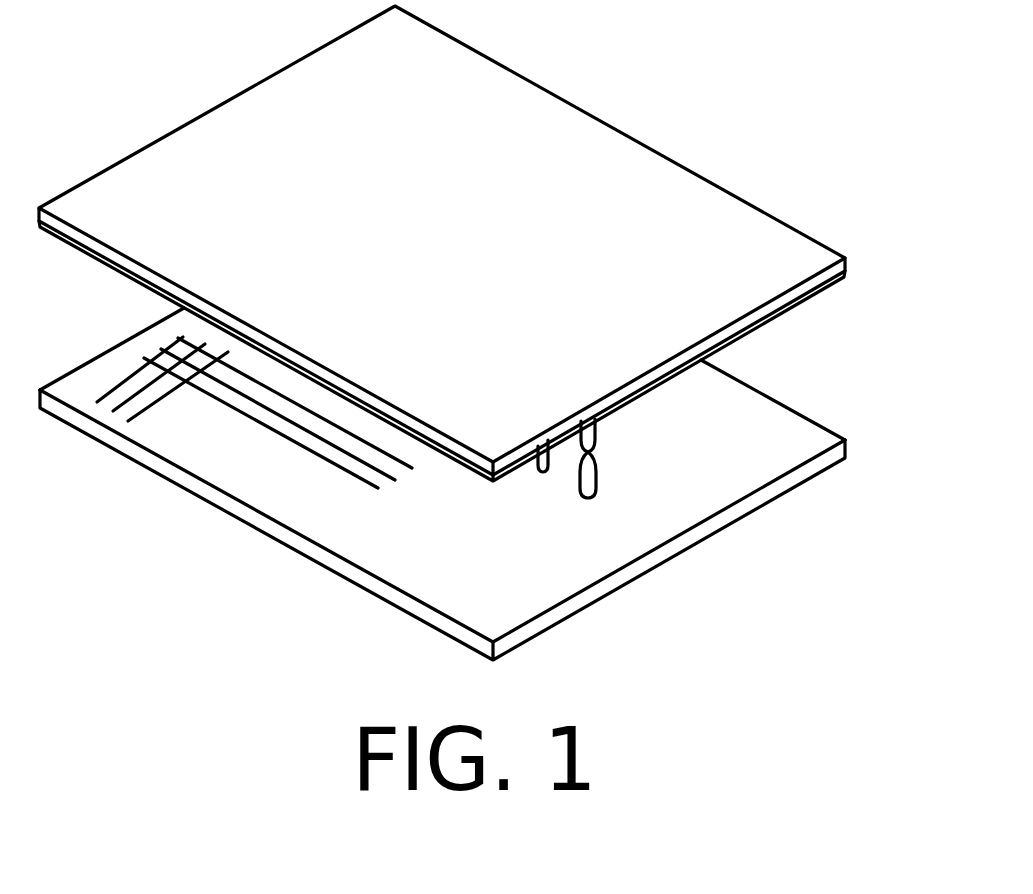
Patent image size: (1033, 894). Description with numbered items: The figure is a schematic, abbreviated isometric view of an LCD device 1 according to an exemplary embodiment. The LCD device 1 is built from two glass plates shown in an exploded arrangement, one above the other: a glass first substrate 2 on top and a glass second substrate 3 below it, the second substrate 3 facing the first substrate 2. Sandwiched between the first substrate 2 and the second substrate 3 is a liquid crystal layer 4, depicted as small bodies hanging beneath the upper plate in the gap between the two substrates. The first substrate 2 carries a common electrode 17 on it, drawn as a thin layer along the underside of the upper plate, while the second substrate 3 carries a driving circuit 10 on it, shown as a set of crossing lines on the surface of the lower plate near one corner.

The LCD device 1 is at (604, 47).
The first substrate 2 is at (790, 246).
The common electrode 17 is at (820, 289).
The second substrate 3 is at (780, 432).
The liquid crystal layer 4 is at (592, 470).
The driving circuit 10 is at (170, 363).